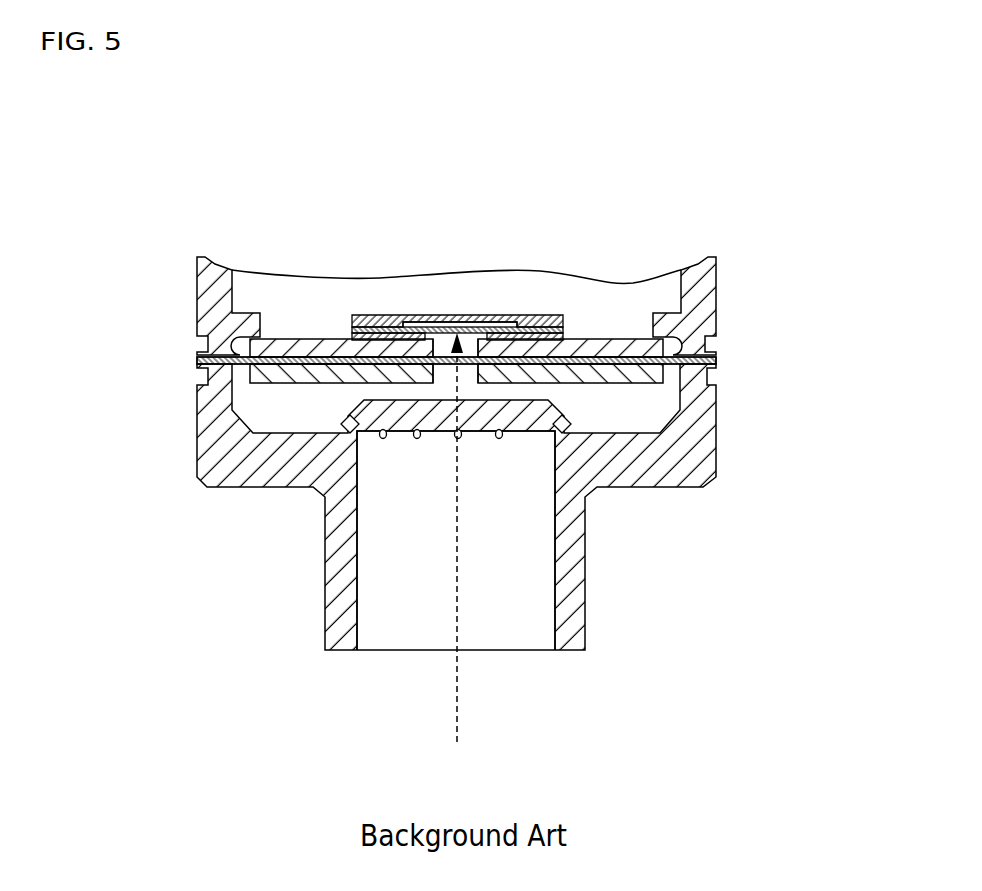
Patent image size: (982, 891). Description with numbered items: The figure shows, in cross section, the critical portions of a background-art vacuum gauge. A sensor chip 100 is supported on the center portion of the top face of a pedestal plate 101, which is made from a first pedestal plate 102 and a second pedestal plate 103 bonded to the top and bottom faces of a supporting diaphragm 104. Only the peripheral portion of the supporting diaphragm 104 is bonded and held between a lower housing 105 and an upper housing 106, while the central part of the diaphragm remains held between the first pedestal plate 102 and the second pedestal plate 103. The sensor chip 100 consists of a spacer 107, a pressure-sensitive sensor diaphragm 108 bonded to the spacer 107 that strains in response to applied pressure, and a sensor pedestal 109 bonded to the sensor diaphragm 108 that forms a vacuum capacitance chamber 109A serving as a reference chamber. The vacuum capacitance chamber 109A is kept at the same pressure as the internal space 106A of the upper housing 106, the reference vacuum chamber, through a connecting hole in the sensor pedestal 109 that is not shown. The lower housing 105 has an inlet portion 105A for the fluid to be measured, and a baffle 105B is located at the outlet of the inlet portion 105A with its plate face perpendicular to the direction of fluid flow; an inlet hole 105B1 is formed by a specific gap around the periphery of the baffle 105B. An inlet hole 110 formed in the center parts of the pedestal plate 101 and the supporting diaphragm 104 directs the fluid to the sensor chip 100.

The sensor chip 100 is at (532, 305).
The pedestal plate 101 is at (807, 312).
The first pedestal plate 102 is at (657, 388).
The second pedestal plate 103 is at (657, 353).
The supporting diaphragm 104 is at (198, 360).
The lower housing 105 is at (212, 458).
The inlet portion 105A is at (502, 617).
The baffle 105B is at (438, 432).
The inlet hole 105B1 is at (347, 422).
The upper housing 106 is at (207, 305).
The internal space (reference vacuum chamber) 106A is at (418, 292).
The spacer 107 is at (330, 370).
The sensor diaphragm 108 is at (352, 330).
The sensor pedestal 109 is at (358, 315).
The vacuum capacitance chamber 109A is at (470, 318).
The inlet hole 110 is at (466, 373).